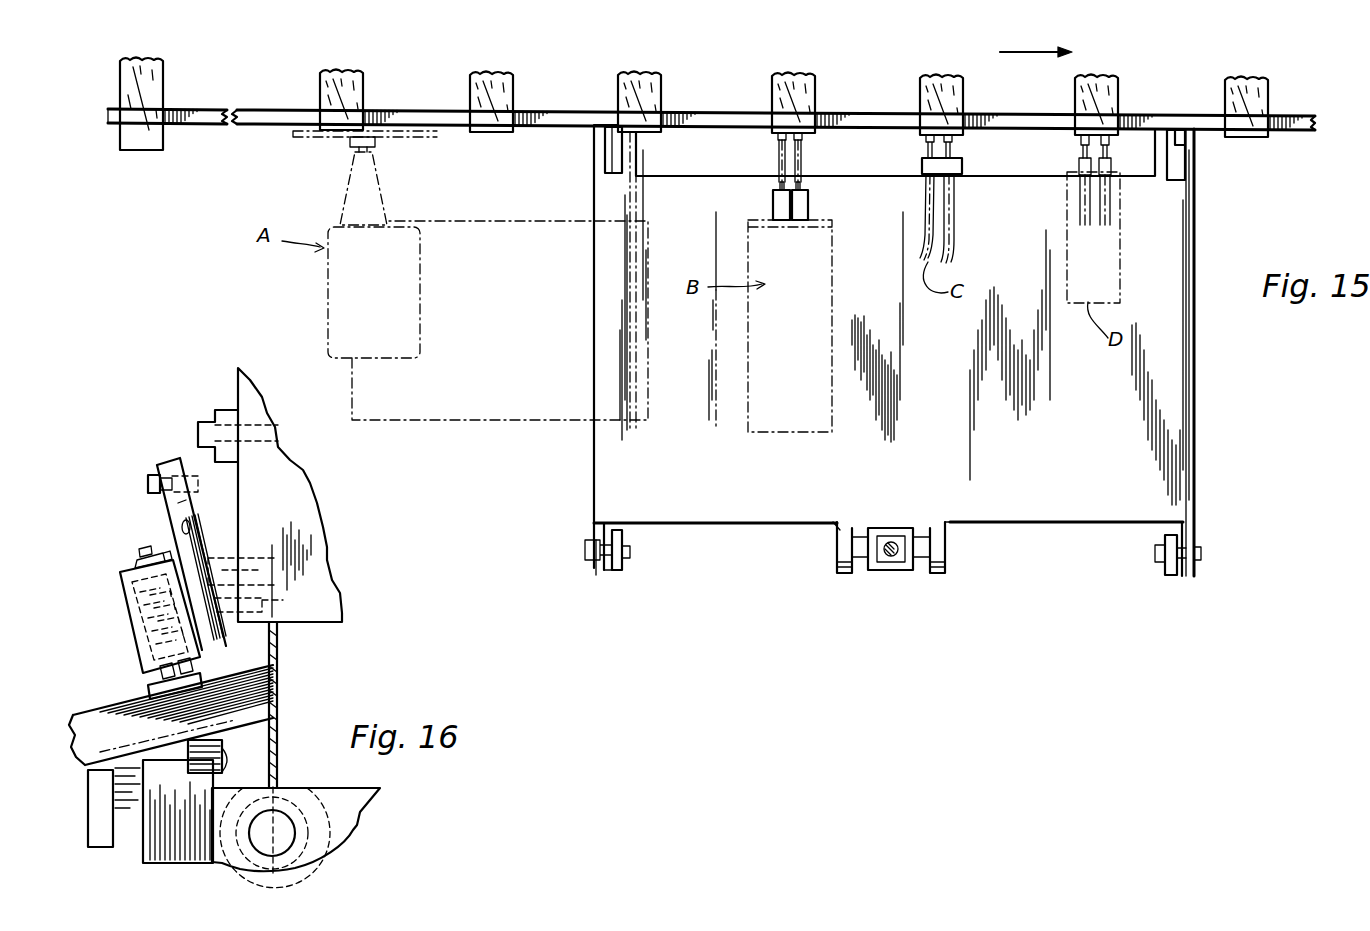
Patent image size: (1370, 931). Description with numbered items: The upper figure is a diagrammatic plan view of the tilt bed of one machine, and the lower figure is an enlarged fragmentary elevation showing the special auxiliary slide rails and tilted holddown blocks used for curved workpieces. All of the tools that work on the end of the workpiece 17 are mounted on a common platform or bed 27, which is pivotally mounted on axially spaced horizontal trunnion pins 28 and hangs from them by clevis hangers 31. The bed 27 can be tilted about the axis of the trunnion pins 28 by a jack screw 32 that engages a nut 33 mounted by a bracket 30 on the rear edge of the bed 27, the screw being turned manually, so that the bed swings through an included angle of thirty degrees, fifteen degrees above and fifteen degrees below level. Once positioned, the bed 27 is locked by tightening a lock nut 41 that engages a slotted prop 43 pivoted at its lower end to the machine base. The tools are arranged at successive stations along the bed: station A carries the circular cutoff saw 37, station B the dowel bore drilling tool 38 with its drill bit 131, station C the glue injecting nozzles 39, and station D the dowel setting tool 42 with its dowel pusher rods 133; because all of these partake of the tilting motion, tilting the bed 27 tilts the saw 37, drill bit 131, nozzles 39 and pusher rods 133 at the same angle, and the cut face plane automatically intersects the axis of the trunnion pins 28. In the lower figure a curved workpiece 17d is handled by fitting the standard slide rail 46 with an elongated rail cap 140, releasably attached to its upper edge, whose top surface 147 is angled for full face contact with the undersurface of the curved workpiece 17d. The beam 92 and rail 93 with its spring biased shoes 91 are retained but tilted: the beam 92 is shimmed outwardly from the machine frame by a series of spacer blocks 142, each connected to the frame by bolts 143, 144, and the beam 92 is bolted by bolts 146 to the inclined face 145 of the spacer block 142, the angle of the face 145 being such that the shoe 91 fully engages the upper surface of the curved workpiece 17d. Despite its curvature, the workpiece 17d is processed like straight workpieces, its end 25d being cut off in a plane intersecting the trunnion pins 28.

In FIG. 15, the workpiece 17 is at (150, 63).
In FIG. 15, the standard slide rail 46 is at (270, 108).
In FIG. 16, the standard slide rail 46 is at (187, 840).
In FIG. 15, the circular cutoff saw 37 is at (315, 136).
In FIG. 16, the circular cutoff saw 37 is at (283, 638).
In FIG. 15, the trunnion pins 28 is at (606, 143).
In FIG. 16, the trunnion pins 28 is at (293, 833).
In FIG. 15, the clevis hangers 31 is at (594, 165).
In FIG. 15, the drill bit 131 is at (780, 157).
In FIG. 15, the glue injecting nozzles 39 is at (928, 145).
In FIG. 15, the dowel pusher rods 133 is at (1100, 178).
In FIG. 15, the dowel setting tool 42 is at (1105, 260).
In FIG. 15, the dowel bore drilling tool 38 is at (753, 383).
In FIG. 15, the bed 27 is at (765, 500).
In FIG. 15, the lock nut 41 is at (622, 553).
In FIG. 15, the slotted prop 43 is at (612, 568).
In FIG. 15, the bracket 30 is at (940, 555).
In FIG. 15, the jack screw 32 is at (890, 560).
In FIG. 15, the nut 33 is at (870, 565).
In FIG. 16, the bolt 143 is at (200, 430).
In FIG. 16, the bolts 146 is at (150, 463).
In FIG. 16, the beam 92 is at (178, 503).
In FIG. 16, the rail 93 is at (131, 571).
In FIG. 16, the spacer block 142 is at (202, 494).
In FIG. 16, the inclined face 145 is at (192, 526).
In FIG. 16, the bolt 144 is at (325, 550).
In FIG. 16, the curved workpiece 17d is at (262, 680).
In FIG. 16, the end 25d is at (277, 702).
In FIG. 16, the top surface 147 is at (190, 726).
In FIG. 16, the spring biased shoes 91 is at (148, 691).
In FIG. 16, the rail cap 140 is at (248, 776).